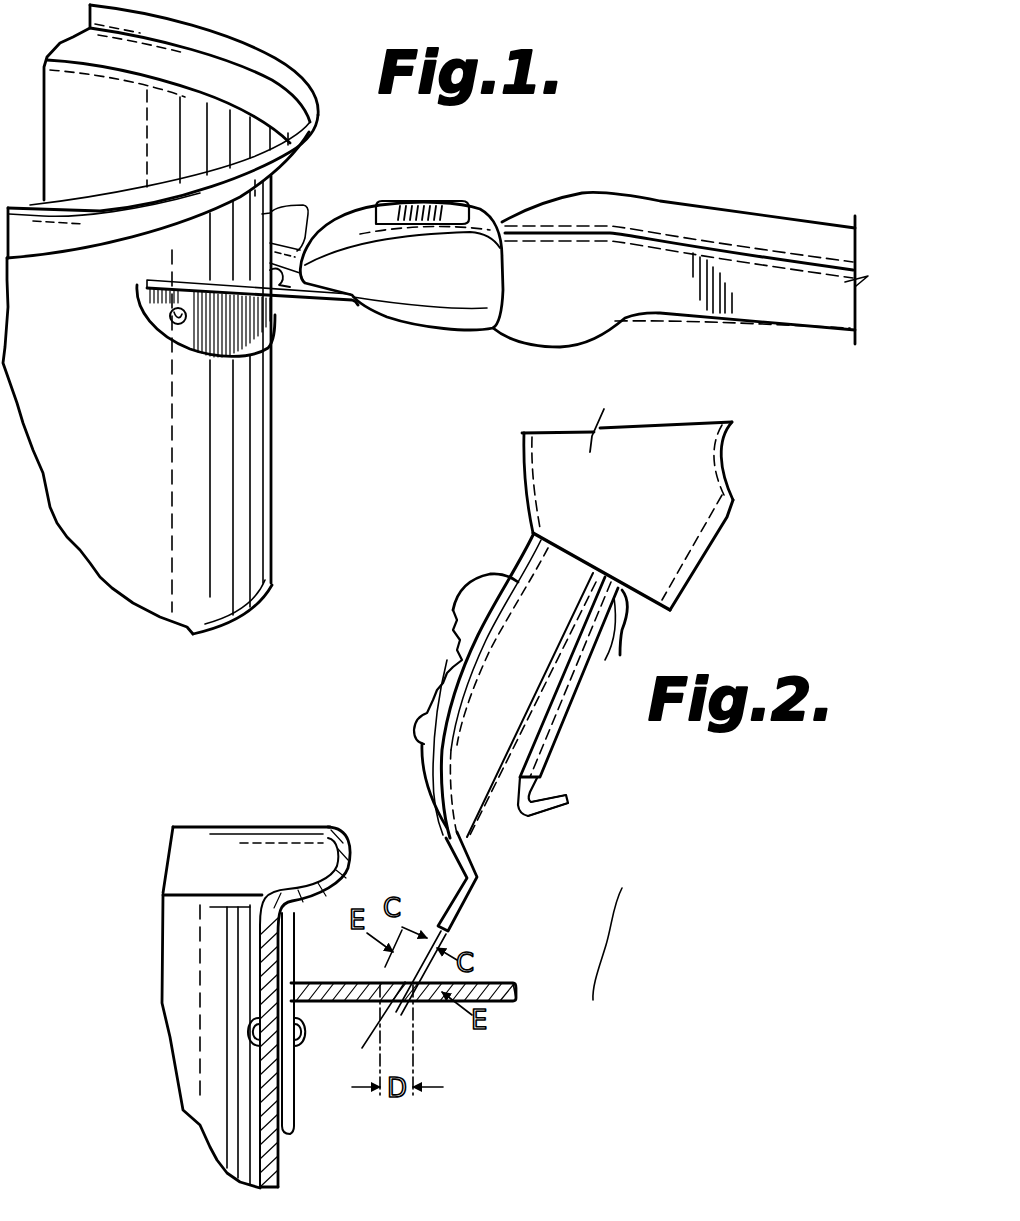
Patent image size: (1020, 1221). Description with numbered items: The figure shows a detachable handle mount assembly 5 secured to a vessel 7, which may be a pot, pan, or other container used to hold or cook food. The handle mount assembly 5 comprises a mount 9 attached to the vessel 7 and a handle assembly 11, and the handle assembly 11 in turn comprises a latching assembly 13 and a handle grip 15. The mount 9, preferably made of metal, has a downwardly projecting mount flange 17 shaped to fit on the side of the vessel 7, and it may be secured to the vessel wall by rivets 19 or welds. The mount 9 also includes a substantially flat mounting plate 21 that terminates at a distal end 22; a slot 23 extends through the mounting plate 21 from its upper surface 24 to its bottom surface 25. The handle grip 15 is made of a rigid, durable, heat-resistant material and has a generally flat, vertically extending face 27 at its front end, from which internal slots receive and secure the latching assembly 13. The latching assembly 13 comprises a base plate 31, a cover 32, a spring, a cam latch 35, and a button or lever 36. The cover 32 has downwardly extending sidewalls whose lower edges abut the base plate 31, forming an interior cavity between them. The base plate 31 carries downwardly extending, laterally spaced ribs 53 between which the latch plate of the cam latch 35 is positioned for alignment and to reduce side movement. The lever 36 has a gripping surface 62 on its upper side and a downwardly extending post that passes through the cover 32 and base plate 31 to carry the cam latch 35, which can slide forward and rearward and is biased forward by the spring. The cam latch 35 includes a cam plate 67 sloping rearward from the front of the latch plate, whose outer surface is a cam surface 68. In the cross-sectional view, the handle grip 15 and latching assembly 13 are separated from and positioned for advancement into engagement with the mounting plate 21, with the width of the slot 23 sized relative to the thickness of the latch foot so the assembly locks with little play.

In FIG. 1, the detachable handle mount assembly 5 is at (373, 143).
In FIG. 1, the vessel 7 is at (243, 40).
In FIG. 2, the vessel 7 is at (230, 826).
In FIG. 1, the mount 9 is at (147, 287).
In FIG. 2, the mount 9 is at (424, 1021).
In FIG. 1, the handle assembly 11 is at (540, 184).
In FIG. 1, the latching assembly 13 is at (413, 334).
In FIG. 2, the latching assembly 13 is at (391, 788).
In FIG. 1, the handle grip 15 is at (733, 211).
In FIG. 2, the handle grip 15 is at (736, 492).
In FIG. 1, the mount flange 17 is at (182, 357).
In FIG. 2, the mount flange 17 is at (292, 1098).
In FIG. 1, the rivets 19 is at (172, 320).
In FIG. 2, the rivets 19 is at (240, 1030).
In FIG. 1, the mounting plate 21 is at (298, 210).
In FIG. 2, the distal end 22 is at (513, 1001).
In FIG. 1, the slot 23 is at (273, 273).
In FIG. 2, the slot 23 is at (369, 1028).
In FIG. 2, the upper surface 24 is at (297, 983).
In FIG. 2, the bottom surface 25 is at (337, 1001).
In FIG. 2, the face 27 is at (657, 611).
In FIG. 2, the base plate 31 is at (490, 838).
In FIG. 2, the cover 32 is at (530, 564).
In FIG. 2, the cam latch 35 is at (536, 800).
In FIG. 1, the lever 36 is at (472, 204).
In FIG. 2, the lever 36 is at (453, 612).
In FIG. 2, the ribs 53 is at (570, 740).
In FIG. 2, the gripping surface 62 is at (457, 668).
In FIG. 2, the cam plate 67 is at (543, 829).
In FIG. 2, the cam surface 68 is at (560, 813).